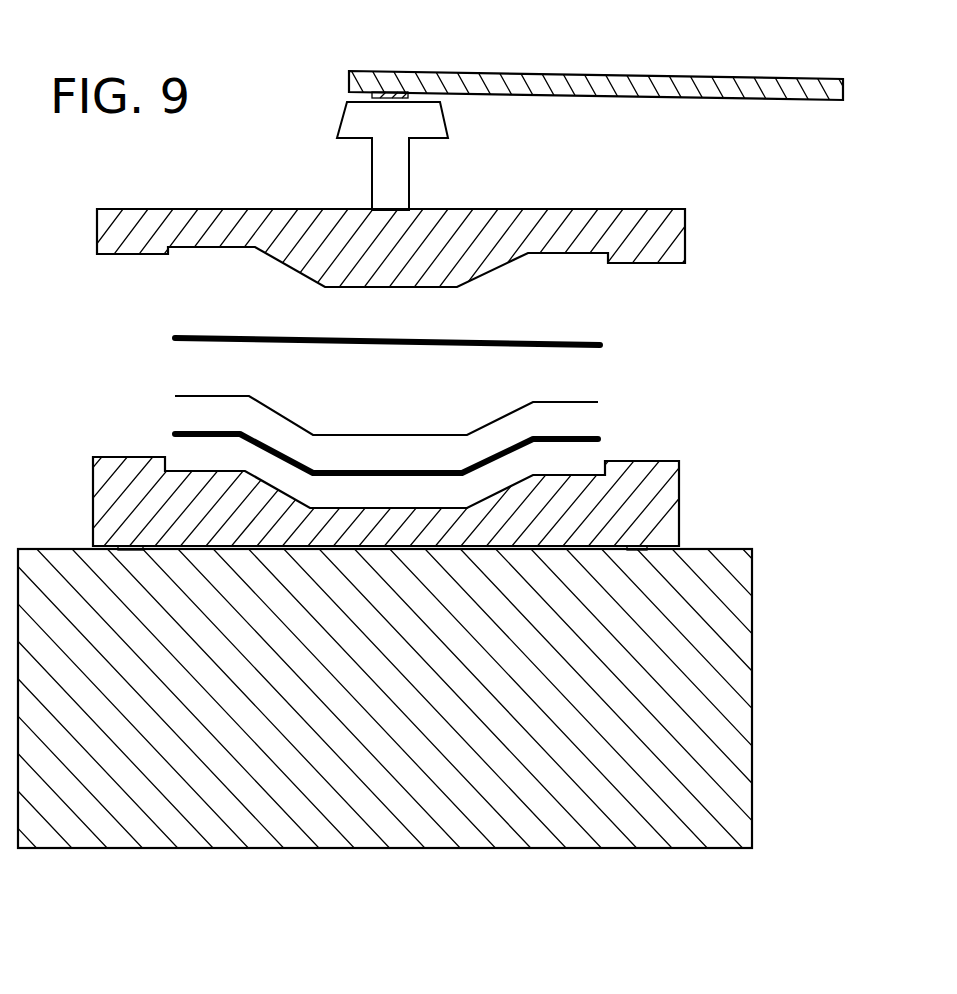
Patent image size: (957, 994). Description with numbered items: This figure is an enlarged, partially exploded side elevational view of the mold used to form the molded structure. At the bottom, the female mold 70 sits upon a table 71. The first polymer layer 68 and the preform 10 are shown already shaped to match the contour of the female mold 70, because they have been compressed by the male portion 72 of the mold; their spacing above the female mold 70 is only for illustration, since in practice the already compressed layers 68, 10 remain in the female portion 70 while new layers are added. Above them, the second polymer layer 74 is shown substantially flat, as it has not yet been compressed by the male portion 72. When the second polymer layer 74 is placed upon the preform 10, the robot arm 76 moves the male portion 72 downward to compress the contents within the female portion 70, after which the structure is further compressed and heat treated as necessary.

The robot arm 76 is at (630, 82).
The male portion 72 is at (686, 236).
The second polymer layer 74 is at (598, 346).
The preform 10 is at (585, 402).
The first polymer layer 68 is at (590, 440).
The female mold 70 is at (680, 503).
The table 71 is at (742, 728).